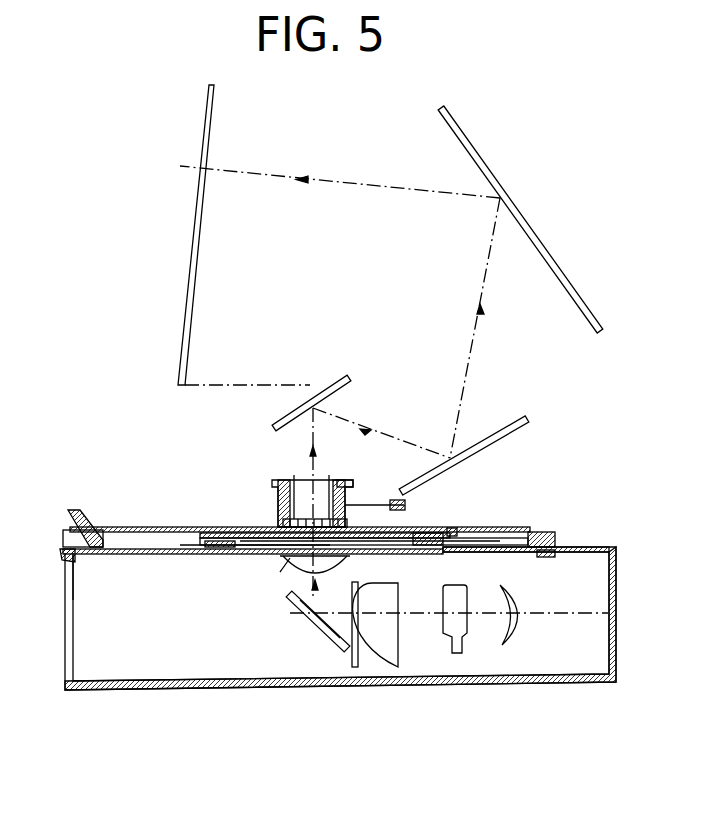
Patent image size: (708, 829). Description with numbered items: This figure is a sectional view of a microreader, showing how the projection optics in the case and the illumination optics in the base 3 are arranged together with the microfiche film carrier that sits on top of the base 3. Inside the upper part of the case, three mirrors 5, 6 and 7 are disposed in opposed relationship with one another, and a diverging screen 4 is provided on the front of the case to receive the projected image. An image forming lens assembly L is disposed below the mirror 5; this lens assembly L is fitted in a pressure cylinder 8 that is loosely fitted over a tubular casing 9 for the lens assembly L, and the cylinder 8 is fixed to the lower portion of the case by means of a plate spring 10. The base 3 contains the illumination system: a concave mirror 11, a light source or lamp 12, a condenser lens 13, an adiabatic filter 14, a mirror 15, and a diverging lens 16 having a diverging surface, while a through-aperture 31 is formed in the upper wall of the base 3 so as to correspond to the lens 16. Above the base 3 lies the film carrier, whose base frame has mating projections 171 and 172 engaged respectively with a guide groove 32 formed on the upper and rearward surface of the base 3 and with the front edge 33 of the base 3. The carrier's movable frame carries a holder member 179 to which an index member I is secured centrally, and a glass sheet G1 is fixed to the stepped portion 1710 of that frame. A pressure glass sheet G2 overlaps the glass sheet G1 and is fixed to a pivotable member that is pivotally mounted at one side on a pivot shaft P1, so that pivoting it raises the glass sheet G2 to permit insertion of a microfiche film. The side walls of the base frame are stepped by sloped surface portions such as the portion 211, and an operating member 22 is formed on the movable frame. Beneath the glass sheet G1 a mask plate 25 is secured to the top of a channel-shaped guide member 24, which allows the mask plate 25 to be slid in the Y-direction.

The base 3 is at (318, 670).
The diverging screen 4 is at (177, 345).
The mirror 5 is at (326, 388).
The mirror 6 is at (503, 429).
The mirror 7 is at (583, 298).
The pressure cylinder 8 is at (278, 492).
The tubular casing 9 is at (348, 482).
The plate spring 10 is at (372, 503).
The concave mirror 11 is at (510, 645).
The light source or lamp 12 is at (460, 650).
The condenser lens 13 is at (395, 650).
The adiabatic filter 14 is at (355, 668).
The mirror 15 is at (313, 628).
The diverging lens 16 is at (312, 632).
The operating member 22 is at (86, 516).
The channel-shaped guide member 24 is at (280, 557).
The mask plate 25 is at (310, 577).
The through-aperture 31 is at (345, 562).
The guide groove 32 is at (542, 557).
The front edge 33 is at (75, 560).
The mating projection 171 is at (67, 556).
The mating projection 172 is at (548, 553).
The holder member 179 is at (188, 556).
The stepped portion 1710 is at (200, 546).
The sloped surface portion 211 is at (240, 527).
The image forming lens assembly L is at (325, 487).
The index member I is at (183, 554).
The glass sheet G1 is at (215, 547).
The pressure glass sheet G2 is at (405, 529).
The pivot shaft P1 is at (430, 548).